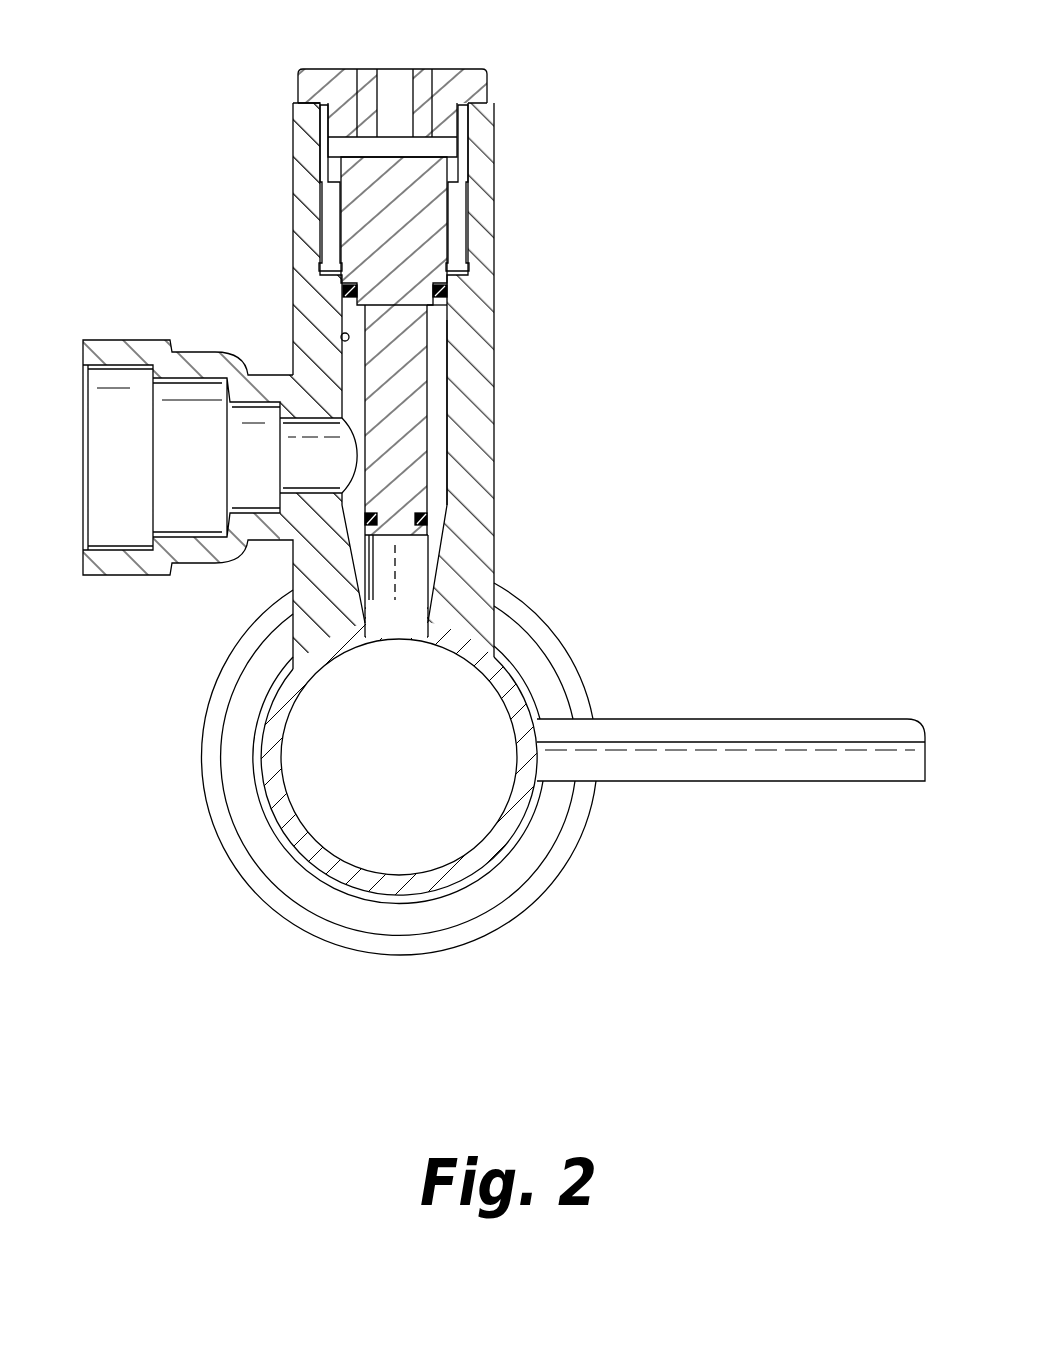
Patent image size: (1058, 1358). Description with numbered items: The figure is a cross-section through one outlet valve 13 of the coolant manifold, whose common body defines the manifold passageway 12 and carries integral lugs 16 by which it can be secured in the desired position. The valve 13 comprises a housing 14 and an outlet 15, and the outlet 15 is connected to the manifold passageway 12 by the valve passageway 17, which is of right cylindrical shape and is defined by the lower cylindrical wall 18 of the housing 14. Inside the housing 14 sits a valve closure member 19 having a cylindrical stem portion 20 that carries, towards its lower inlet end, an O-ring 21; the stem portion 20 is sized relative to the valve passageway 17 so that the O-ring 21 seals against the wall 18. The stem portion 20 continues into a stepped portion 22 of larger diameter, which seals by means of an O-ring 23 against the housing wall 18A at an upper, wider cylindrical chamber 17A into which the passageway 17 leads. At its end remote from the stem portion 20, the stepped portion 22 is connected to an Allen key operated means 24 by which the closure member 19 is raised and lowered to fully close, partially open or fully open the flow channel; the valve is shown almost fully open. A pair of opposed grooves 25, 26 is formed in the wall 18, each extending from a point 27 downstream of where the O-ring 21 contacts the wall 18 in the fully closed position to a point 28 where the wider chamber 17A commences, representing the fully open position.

The manifold passageway 12 is at (358, 834).
The outlet valve 13 is at (501, 289).
The housing 14 is at (497, 409).
The outlet 15 is at (127, 459).
The integral lugs 16 is at (756, 762).
The valve passageway 17 is at (402, 618).
The upper cylindrical chamber 17A is at (440, 355).
The lower cylindrical wall 18 is at (370, 640).
The housing wall 18A is at (341, 334).
The valve closure member 19 is at (432, 320).
The cylindrical stem portion 20 is at (435, 447).
The O-ring 21 is at (430, 521).
The stepped portion 22 is at (415, 230).
The O-ring 23 is at (333, 265).
The Allen key operated means 24 is at (402, 103).
The groove 25 is at (437, 557).
The groove 26 is at (352, 534).
The point 27 is at (368, 624).
The point 28 is at (365, 516).